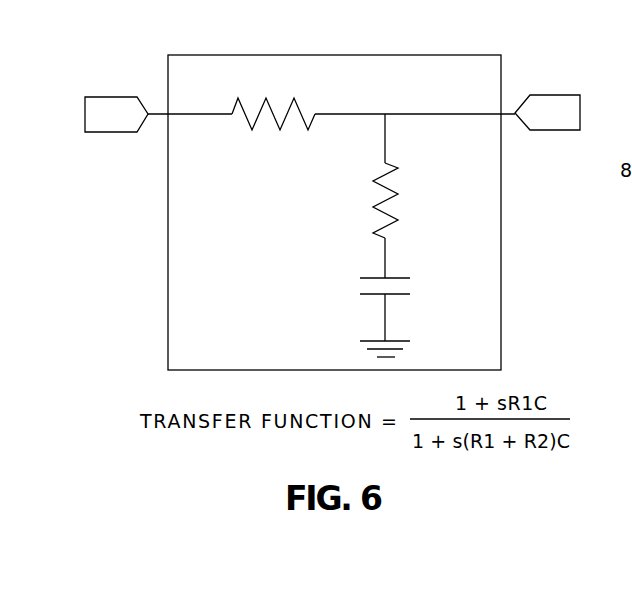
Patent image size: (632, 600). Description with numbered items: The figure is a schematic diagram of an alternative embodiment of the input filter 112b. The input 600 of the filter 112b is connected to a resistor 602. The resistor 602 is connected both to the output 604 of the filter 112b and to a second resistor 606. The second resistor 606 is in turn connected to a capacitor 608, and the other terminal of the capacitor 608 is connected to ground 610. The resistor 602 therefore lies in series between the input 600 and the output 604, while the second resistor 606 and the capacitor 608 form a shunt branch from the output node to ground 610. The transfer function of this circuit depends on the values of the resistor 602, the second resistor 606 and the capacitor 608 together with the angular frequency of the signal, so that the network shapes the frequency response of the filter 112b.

The input 600 is at (100, 97).
The resistor 602 is at (266, 97).
The output 604 is at (563, 95).
The second resistor 606 is at (377, 177).
The capacitor 608 is at (368, 277).
The ground 610 is at (368, 340).
The input filter 112b is at (492, 363).